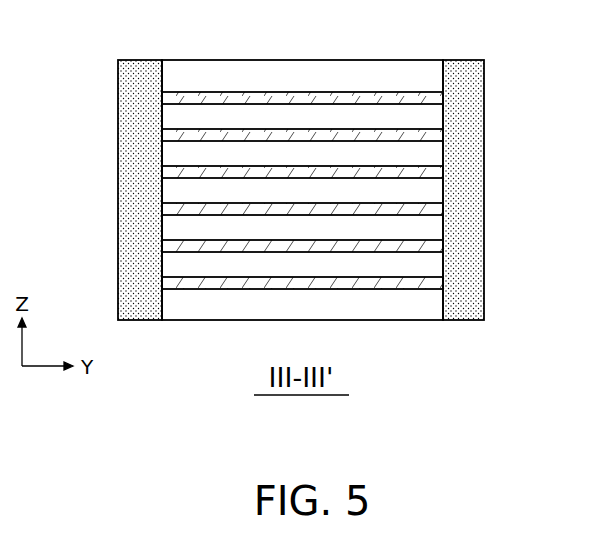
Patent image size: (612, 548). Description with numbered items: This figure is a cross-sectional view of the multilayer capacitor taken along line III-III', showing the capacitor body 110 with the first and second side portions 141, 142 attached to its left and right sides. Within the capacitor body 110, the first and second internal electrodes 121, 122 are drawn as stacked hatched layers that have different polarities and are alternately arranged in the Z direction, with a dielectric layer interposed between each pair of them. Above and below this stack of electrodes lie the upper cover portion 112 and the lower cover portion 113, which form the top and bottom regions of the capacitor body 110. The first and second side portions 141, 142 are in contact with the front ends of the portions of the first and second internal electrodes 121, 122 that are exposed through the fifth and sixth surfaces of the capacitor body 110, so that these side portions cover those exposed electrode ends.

The capacitor body 110 is at (210, 59).
The upper cover portion 112 is at (413, 76).
The lower cover portion 113 is at (412, 302).
The first internal electrode 121 is at (297, 91).
The second internal electrode 122 is at (363, 120).
The first side portion 141 is at (142, 78).
The second side portion 142 is at (460, 80).